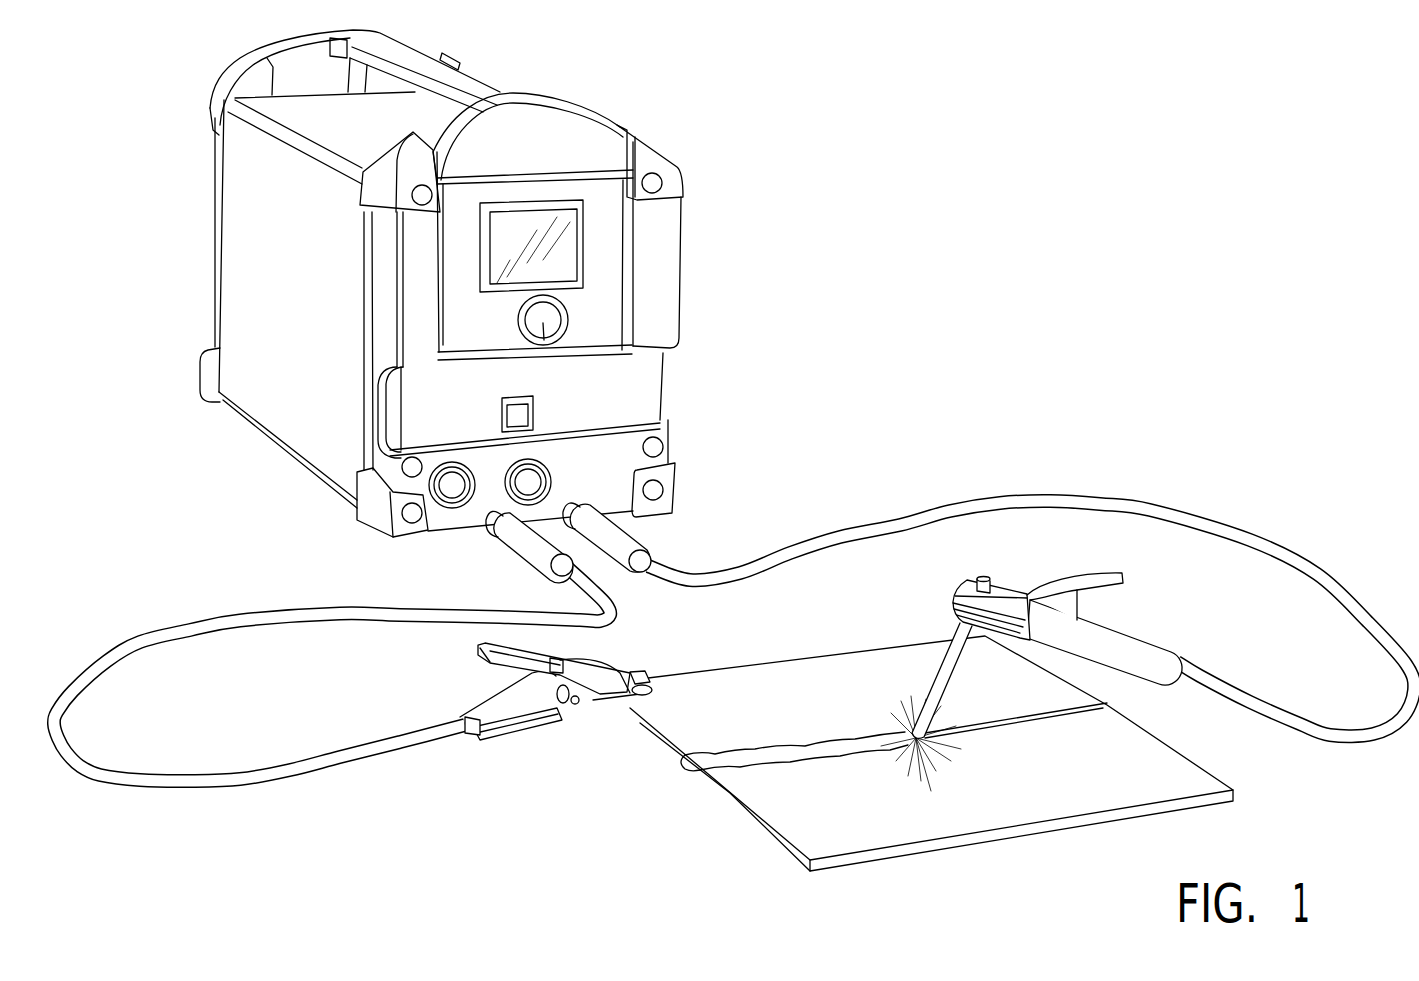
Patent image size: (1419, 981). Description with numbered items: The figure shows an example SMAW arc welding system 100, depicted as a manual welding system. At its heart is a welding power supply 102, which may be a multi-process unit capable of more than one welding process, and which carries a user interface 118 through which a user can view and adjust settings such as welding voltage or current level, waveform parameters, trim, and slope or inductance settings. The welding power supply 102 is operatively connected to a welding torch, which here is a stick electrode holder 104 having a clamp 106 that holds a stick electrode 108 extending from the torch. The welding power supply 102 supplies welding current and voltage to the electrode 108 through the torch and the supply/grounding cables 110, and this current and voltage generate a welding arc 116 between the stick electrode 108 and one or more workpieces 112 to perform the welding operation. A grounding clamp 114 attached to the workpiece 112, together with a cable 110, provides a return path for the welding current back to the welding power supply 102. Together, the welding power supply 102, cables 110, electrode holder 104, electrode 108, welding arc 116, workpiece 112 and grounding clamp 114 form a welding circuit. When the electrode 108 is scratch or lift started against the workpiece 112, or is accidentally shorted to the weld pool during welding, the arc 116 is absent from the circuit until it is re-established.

The arc welding system 100 is at (734, 450).
The welding power supply 102 is at (248, 192).
The stick electrode holder 104 is at (1148, 647).
The clamp 106 is at (1007, 593).
The stick electrode 108 is at (947, 657).
The supply/grounding cables 110 is at (517, 546).
The workpiece 112 is at (740, 805).
The grounding clamp 114 is at (533, 733).
The welding arc 116 is at (957, 739).
The user interface 118 is at (510, 230).